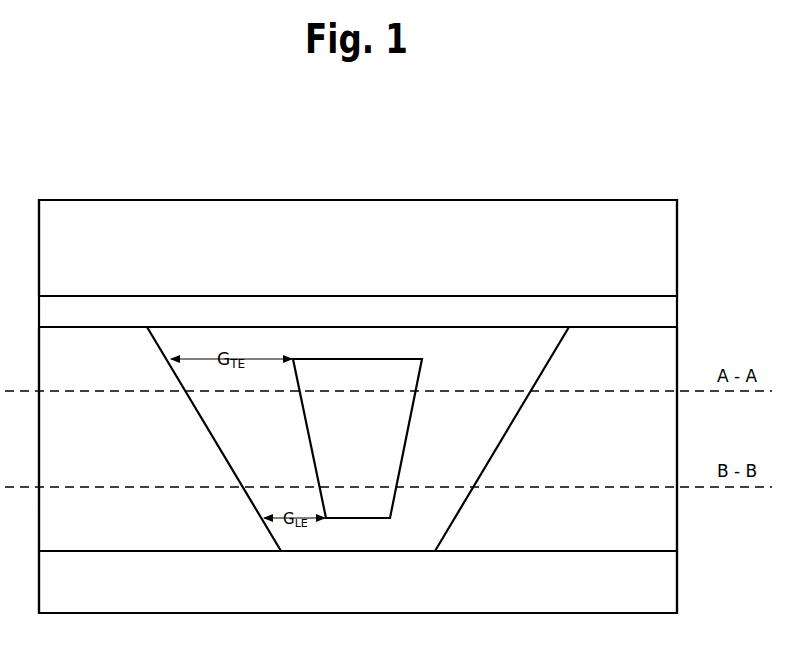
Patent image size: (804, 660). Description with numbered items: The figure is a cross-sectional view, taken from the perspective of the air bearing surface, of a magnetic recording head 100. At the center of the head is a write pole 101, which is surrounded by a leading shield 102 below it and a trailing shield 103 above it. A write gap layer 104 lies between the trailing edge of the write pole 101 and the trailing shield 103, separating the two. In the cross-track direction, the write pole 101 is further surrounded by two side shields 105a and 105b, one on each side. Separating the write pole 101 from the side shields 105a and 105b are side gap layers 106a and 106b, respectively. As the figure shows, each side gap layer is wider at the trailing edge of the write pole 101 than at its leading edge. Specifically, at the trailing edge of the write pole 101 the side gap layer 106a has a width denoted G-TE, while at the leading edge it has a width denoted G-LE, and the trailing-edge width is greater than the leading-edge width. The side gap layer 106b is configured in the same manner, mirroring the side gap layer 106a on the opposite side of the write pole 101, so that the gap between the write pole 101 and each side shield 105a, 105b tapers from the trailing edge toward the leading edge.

The magnetic recording head 100 is at (552, 135).
The write pole 101 is at (357, 438).
The leading shield 102 is at (358, 582).
The trailing shield 103 is at (358, 248).
The write gap layer 104 is at (358, 311).
The side shield 105a is at (160, 439).
The side shield 105b is at (556, 439).
The side gap layer 106a is at (236, 439).
The side gap layer 106b is at (479, 439).